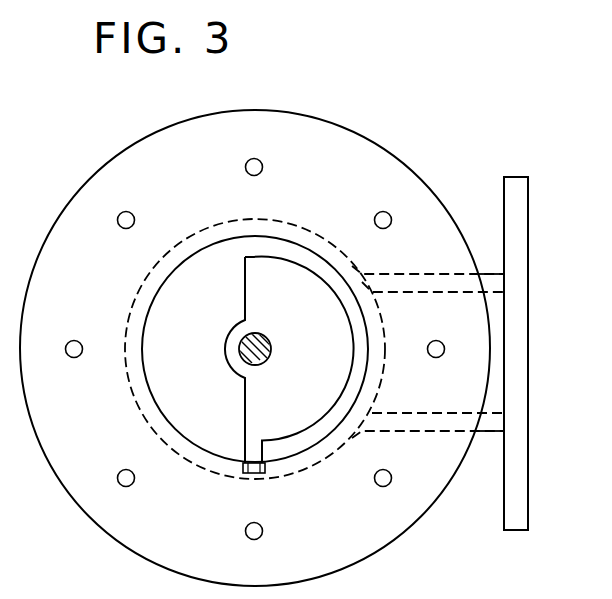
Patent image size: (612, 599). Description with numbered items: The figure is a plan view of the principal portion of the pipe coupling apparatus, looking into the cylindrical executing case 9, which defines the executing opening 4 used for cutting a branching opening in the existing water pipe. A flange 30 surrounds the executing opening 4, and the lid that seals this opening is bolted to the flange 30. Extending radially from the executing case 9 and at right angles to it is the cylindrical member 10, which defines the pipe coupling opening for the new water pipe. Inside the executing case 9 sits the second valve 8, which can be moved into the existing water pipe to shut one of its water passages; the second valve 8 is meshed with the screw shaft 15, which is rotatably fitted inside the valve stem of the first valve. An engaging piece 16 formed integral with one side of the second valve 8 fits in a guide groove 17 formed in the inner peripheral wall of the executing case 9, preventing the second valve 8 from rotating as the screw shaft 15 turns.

The flange 30 is at (62, 228).
The executing case 9 is at (134, 399).
The executing opening 4 is at (319, 424).
The second valve 8 is at (258, 295).
The screw shaft 15 is at (238, 370).
The guide groove 17 is at (245, 455).
The engaging piece 16 is at (256, 474).
The cylindrical member 10 is at (494, 433).